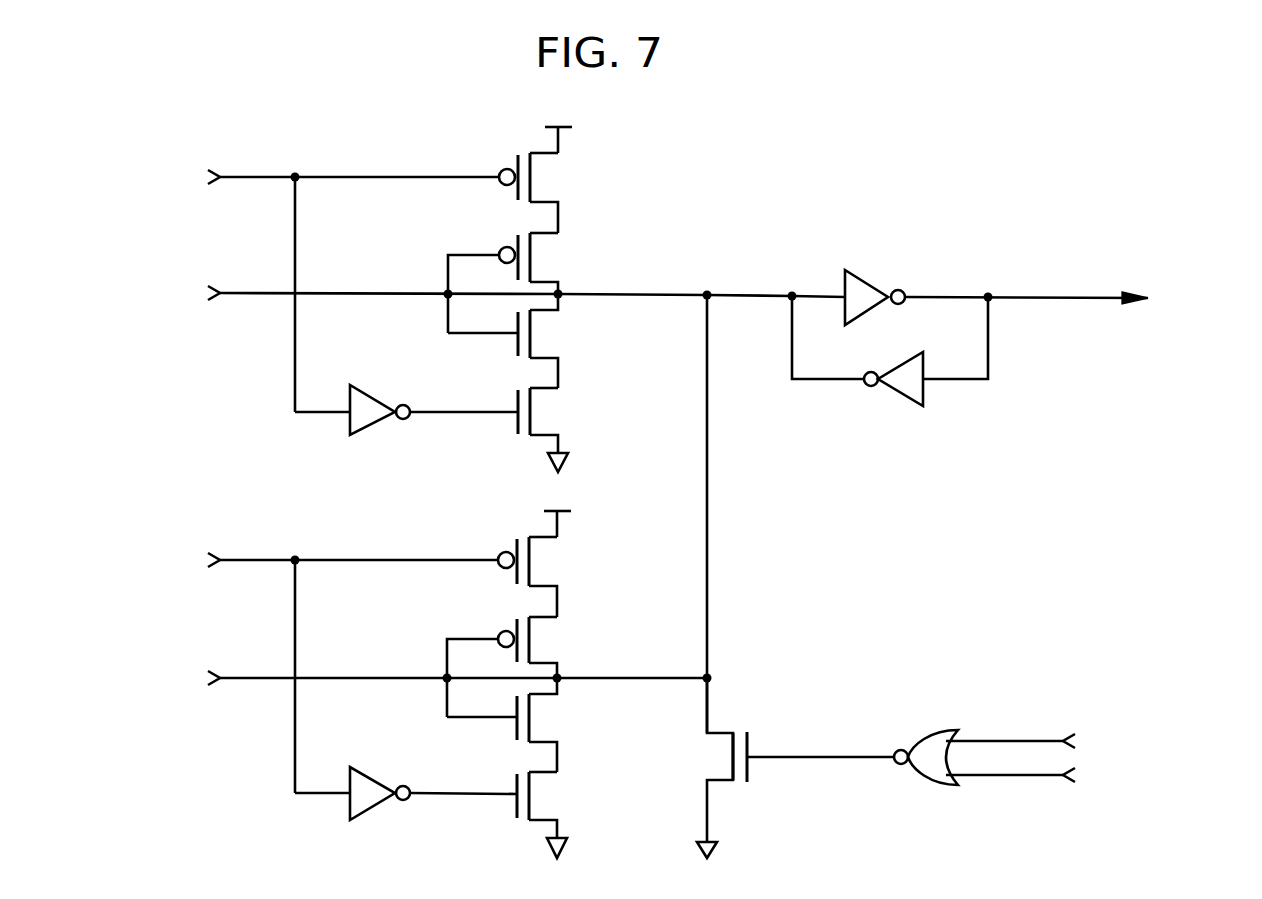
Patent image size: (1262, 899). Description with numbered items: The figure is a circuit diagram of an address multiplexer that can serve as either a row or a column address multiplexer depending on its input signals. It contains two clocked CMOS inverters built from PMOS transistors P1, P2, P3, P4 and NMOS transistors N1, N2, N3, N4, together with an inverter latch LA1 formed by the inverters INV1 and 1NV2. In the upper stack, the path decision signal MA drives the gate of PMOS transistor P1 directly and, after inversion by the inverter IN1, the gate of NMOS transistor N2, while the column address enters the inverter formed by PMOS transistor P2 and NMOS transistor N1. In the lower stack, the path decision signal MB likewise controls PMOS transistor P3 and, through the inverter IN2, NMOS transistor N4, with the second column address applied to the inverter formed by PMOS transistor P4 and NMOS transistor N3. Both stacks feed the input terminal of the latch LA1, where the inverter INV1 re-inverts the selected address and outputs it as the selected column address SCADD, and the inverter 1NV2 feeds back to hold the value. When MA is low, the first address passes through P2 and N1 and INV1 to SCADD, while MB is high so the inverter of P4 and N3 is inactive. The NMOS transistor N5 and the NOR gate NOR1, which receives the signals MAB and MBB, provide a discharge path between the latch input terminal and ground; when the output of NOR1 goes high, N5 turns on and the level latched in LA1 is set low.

The path decision signal MA is at (333, 288).
The PMOS transistor P1 is at (537, 180).
The PMOS transistor P2 is at (512, 283).
The NMOS transistor N1 is at (512, 341).
The NMOS transistor N2 is at (547, 430).
The inverter IN1 is at (370, 427).
The inverter INV1 is at (882, 282).
The inverter latch LA1 is at (900, 357).
The inverter 1NV2 is at (898, 395).
The selected column address SCADD is at (1068, 313).
The path decision signal MB is at (333, 670).
The PMOS transistor P3 is at (536, 564).
The PMOS transistor P4 is at (511, 667).
The NMOS transistor N3 is at (511, 725).
The NMOS transistor N4 is at (546, 815).
The inverter IN2 is at (370, 808).
The NMOS transistor N5 is at (791, 768).
The NOR gate NOR1 is at (920, 730).
The inverted path decision signal MAB is at (1038, 741).
The inverted path decision signal MBB is at (1038, 775).